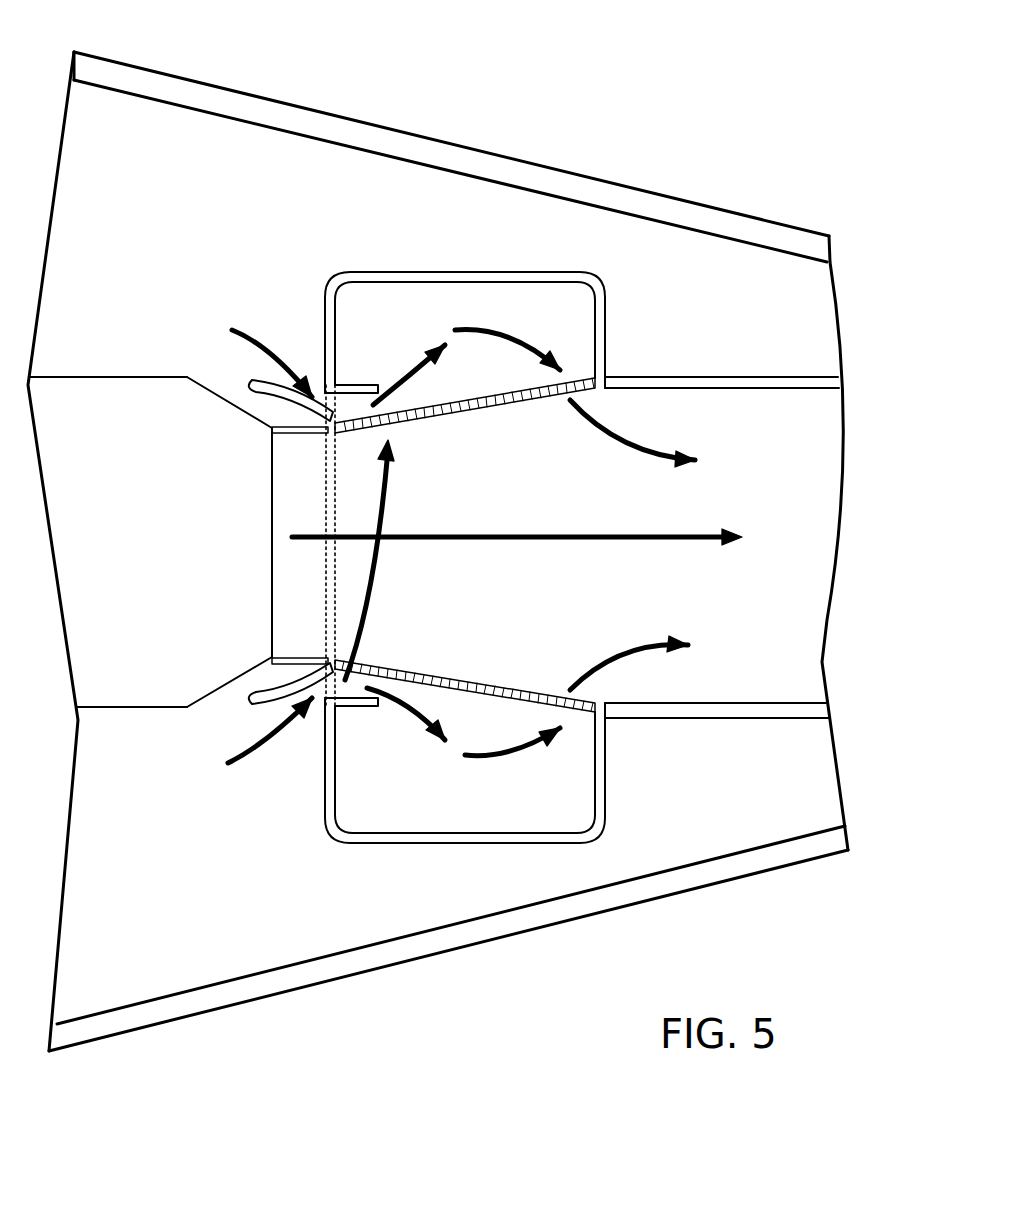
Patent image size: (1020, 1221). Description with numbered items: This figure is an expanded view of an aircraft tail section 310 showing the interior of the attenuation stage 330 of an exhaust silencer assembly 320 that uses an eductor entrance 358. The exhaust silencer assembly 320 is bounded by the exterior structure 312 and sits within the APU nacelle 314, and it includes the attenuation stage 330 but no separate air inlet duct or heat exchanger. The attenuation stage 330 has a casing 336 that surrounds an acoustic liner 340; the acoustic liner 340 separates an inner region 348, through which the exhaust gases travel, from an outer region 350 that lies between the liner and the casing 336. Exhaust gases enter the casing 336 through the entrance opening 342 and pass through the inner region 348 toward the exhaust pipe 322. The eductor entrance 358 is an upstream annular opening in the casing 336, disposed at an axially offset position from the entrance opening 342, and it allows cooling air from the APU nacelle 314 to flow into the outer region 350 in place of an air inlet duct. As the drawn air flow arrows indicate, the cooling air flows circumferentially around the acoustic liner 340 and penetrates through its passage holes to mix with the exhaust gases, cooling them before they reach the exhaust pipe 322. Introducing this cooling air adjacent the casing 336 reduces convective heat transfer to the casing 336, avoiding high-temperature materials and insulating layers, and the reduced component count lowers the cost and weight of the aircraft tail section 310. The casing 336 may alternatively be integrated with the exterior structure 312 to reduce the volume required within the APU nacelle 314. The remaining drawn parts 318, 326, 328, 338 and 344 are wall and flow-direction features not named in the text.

The aircraft tail section 310 is at (680, 95).
The exterior structure 312 is at (432, 134).
The APU nacelle 314 is at (290, 175).
The angled inlet wall 318 is at (245, 402).
The exhaust silencer assembly 320 is at (437, 882).
The exhaust pipe 322 is at (720, 377).
The upstream passage wall 326 is at (143, 395).
The core flow direction 328 is at (696, 530).
The attenuation stage 330 is at (525, 498).
The casing 336 is at (415, 272).
The duct aft wall 338 is at (572, 320).
The acoustic liner 340 is at (440, 410).
The entrance opening 342 is at (322, 632).
The outlet opening 344 is at (608, 688).
The inner region 348 is at (567, 580).
The outer region 350 is at (412, 338).
The eductor entrance 358 is at (310, 395).